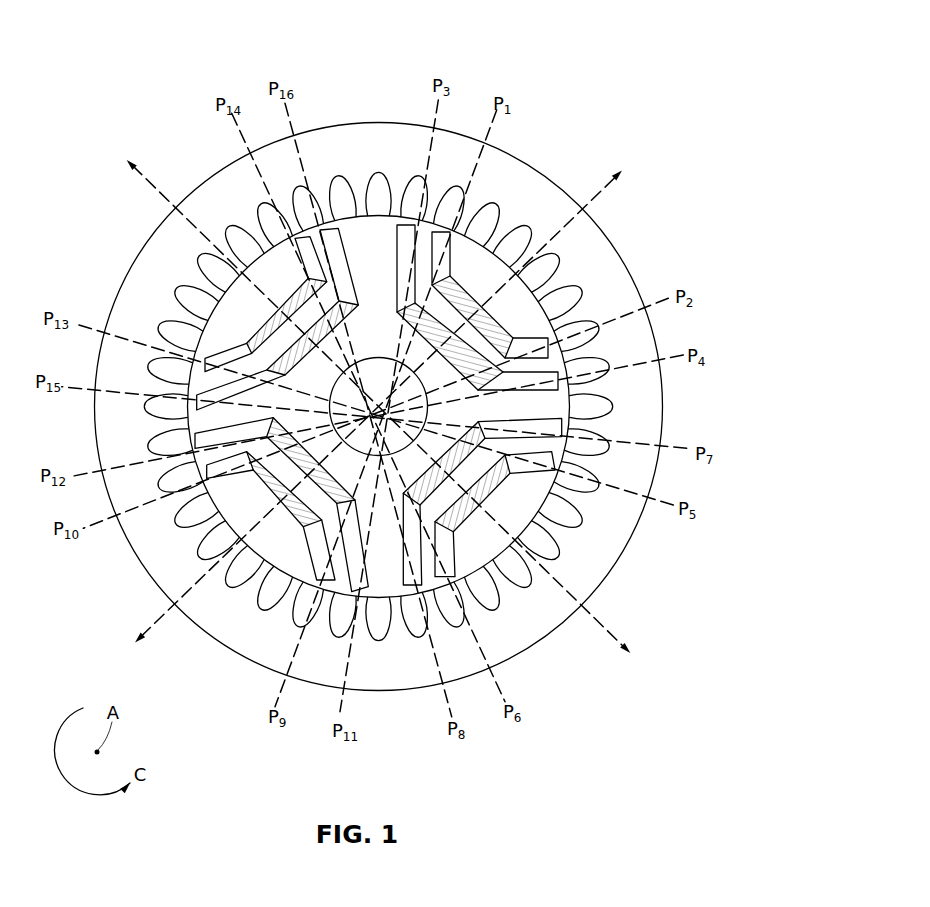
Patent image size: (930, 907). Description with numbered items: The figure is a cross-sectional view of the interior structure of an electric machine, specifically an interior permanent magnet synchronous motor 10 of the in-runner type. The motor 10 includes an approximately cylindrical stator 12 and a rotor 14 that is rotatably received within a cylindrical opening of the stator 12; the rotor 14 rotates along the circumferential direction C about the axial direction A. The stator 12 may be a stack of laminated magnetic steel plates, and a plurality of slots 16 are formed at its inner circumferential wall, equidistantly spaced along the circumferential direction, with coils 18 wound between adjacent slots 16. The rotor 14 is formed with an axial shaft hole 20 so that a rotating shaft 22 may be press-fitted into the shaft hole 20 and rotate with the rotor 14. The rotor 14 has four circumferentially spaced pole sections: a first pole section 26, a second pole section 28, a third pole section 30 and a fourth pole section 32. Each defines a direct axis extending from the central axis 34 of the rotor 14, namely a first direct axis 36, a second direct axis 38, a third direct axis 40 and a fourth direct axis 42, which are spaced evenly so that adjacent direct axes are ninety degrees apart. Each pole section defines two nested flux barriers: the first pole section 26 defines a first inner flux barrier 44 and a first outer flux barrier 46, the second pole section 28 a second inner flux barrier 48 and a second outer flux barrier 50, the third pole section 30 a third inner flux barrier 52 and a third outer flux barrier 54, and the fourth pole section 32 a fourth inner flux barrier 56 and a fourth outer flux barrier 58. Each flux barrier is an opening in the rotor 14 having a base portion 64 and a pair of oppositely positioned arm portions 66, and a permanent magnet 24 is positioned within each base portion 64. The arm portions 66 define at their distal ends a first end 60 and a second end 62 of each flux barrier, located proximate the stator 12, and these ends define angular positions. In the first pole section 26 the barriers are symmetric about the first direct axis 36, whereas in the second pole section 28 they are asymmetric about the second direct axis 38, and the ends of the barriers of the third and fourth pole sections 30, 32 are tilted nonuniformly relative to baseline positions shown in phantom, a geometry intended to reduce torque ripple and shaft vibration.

The interior permanent magnet synchronous motor 10 is at (513, 55).
The stator 12 is at (503, 167).
The rotor 14 is at (390, 226).
The slots 16 is at (525, 230).
The coils 18 is at (508, 214).
The axial shaft hole 20 is at (415, 407).
The rotating shaft 22 is at (425, 425).
The permanent magnet 24 is at (298, 527).
The first pole section 26 is at (637, 240).
The second pole section 28 is at (563, 655).
The third pole section 30 is at (177, 645).
The fourth pole section 32 is at (181, 170).
The central axis 34 is at (386, 380).
The first direct axis 36 is at (605, 186).
The second direct axis 38 is at (603, 626).
The third direct axis 40 is at (153, 624).
The fourth direct axis 42 is at (203, 240).
The first inner flux barrier 44 is at (492, 382).
The first outer flux barrier 46 is at (517, 338).
The second inner flux barrier 48 is at (418, 483).
The second outer flux barrier 50 is at (442, 533).
The third inner flux barrier 52 is at (282, 431).
The third outer flux barrier 54 is at (242, 465).
The fourth inner flux barrier 56 is at (352, 309).
The fourth outer flux barrier 58 is at (242, 343).
The first end 60 is at (422, 215).
The second end 62 is at (559, 352).
The base portion 64 is at (433, 356).
The arm portions 66 is at (405, 268).